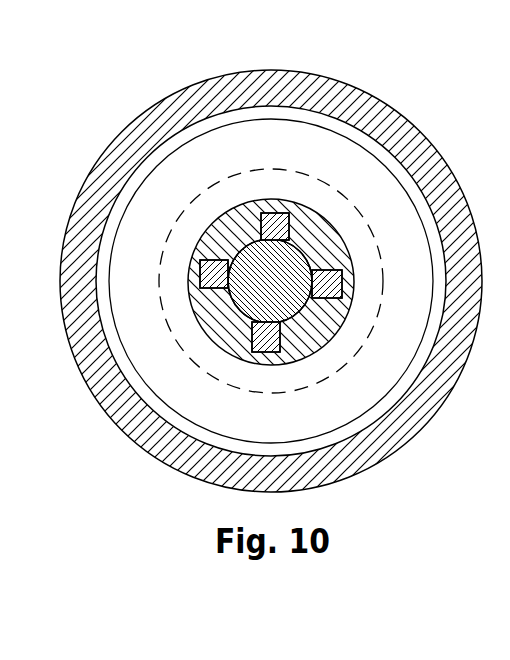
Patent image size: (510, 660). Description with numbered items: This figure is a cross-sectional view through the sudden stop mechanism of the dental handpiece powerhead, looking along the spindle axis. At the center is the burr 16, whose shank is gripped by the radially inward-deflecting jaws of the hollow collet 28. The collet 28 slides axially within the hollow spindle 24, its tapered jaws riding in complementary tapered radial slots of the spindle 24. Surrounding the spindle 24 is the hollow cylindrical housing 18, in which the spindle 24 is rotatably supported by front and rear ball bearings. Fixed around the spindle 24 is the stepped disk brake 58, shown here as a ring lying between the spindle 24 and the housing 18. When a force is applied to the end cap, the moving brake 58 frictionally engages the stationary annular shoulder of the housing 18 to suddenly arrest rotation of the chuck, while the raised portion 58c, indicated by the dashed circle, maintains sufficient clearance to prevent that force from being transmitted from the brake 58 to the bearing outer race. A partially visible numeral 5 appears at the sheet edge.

The burr 16 is at (248, 300).
The housing 18 is at (108, 178).
The spindle 24 is at (213, 225).
The collet 28 is at (217, 260).
The stepped disk brake 58 is at (373, 170).
The raised portion 58c is at (315, 173).
The partial numeral 5 is at (505, 303).